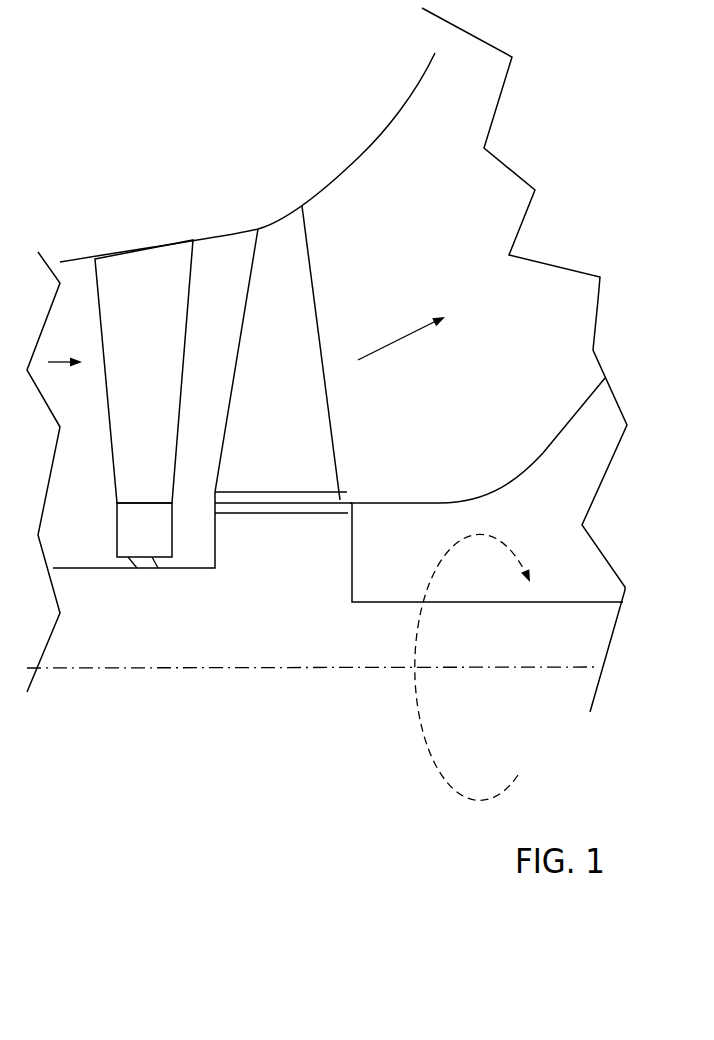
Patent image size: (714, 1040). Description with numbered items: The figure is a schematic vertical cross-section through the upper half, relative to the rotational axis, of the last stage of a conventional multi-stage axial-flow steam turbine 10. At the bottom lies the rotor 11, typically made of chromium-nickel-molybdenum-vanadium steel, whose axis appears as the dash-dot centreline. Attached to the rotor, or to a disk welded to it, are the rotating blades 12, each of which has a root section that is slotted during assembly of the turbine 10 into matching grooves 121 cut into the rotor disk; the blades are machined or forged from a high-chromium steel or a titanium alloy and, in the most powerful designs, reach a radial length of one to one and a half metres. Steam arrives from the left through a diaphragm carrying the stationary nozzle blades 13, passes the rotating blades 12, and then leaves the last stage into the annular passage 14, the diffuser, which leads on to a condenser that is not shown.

The multi-stage steam turbine 10 is at (236, 114).
The rotor 11 is at (363, 651).
The rotating blades 12 is at (300, 401).
The grooves 121 is at (345, 492).
The stationary nozzle blades 13 is at (157, 368).
The annular passage 14 is at (415, 93).